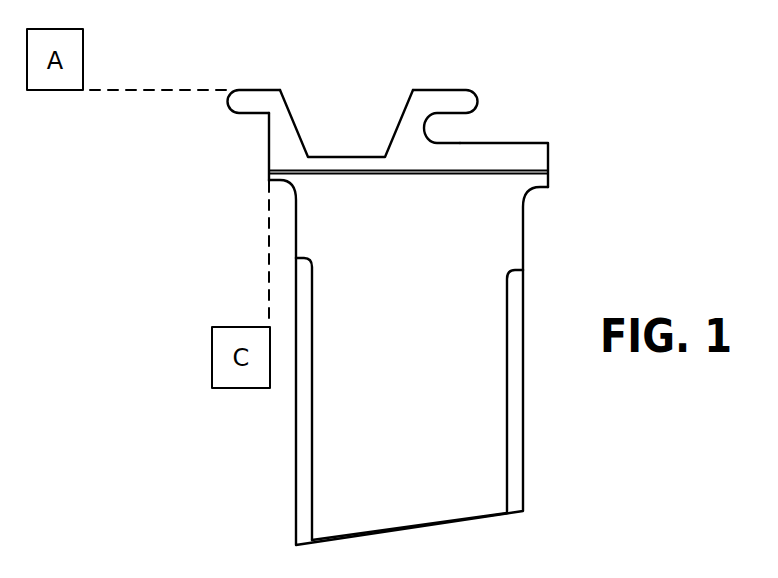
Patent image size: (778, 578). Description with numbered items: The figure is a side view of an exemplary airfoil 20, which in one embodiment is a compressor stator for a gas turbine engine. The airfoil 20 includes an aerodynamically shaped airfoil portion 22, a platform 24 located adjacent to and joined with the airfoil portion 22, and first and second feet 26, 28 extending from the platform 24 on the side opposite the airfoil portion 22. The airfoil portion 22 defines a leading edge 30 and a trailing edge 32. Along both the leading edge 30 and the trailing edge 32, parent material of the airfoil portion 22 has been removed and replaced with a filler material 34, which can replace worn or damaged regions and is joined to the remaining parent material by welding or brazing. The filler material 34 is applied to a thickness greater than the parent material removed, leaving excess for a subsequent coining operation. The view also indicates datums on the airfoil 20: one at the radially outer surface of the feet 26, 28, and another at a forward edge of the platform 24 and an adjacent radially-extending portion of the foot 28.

The airfoil 20 is at (633, 184).
The airfoil portion 22 is at (393, 325).
The platform 24 is at (514, 157).
The first foot 26 is at (449, 100).
The second foot 28 is at (259, 100).
The leading edge 30 is at (297, 495).
The trailing edge 32 is at (524, 240).
The filler material 34 is at (303, 432).